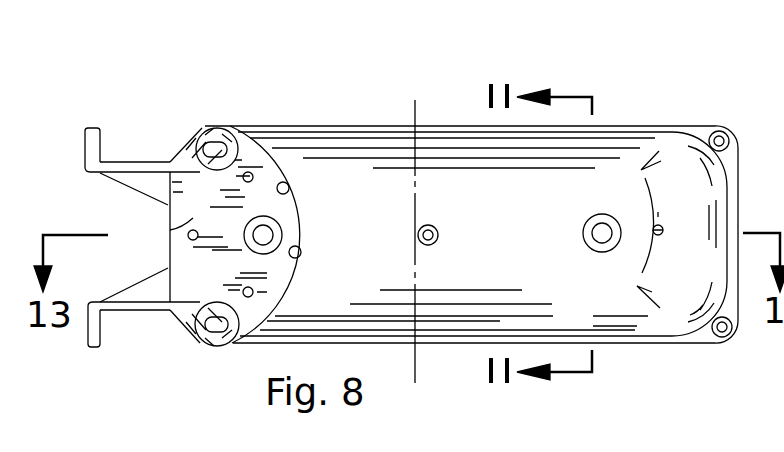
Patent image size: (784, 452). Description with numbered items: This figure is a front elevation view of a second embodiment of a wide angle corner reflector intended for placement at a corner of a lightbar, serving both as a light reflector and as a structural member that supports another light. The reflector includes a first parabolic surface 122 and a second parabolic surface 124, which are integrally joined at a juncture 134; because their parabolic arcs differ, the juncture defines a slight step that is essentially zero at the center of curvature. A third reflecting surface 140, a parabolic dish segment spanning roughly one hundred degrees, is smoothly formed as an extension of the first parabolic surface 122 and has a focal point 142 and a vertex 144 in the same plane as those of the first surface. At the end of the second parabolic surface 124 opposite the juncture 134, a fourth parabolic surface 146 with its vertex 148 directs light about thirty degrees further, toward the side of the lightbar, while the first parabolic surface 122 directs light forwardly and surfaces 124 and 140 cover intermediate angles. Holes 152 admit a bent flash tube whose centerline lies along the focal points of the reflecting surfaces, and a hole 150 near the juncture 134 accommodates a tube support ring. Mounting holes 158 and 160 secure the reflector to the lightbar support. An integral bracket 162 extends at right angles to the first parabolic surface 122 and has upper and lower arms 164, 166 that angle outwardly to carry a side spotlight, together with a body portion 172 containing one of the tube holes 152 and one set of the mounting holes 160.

The first parabolic surface 122 is at (543, 276).
The second parabolic surface 124 is at (382, 268).
The juncture 134 is at (416, 358).
The third reflecting surface 140 is at (703, 262).
The focal point 142 is at (598, 248).
The vertex 144 is at (600, 216).
The fourth parabolic surface 146 is at (288, 183).
The vertex 148 is at (312, 256).
The hole 150 is at (440, 231).
The holes 152 is at (277, 225).
The mounting holes 158 is at (716, 136).
The mounting holes 160 is at (210, 137).
The integral bracket 162 is at (93, 96).
The upper arm 164 is at (85, 141).
The lower arm 166 is at (85, 335).
The body portion 172 is at (170, 230).